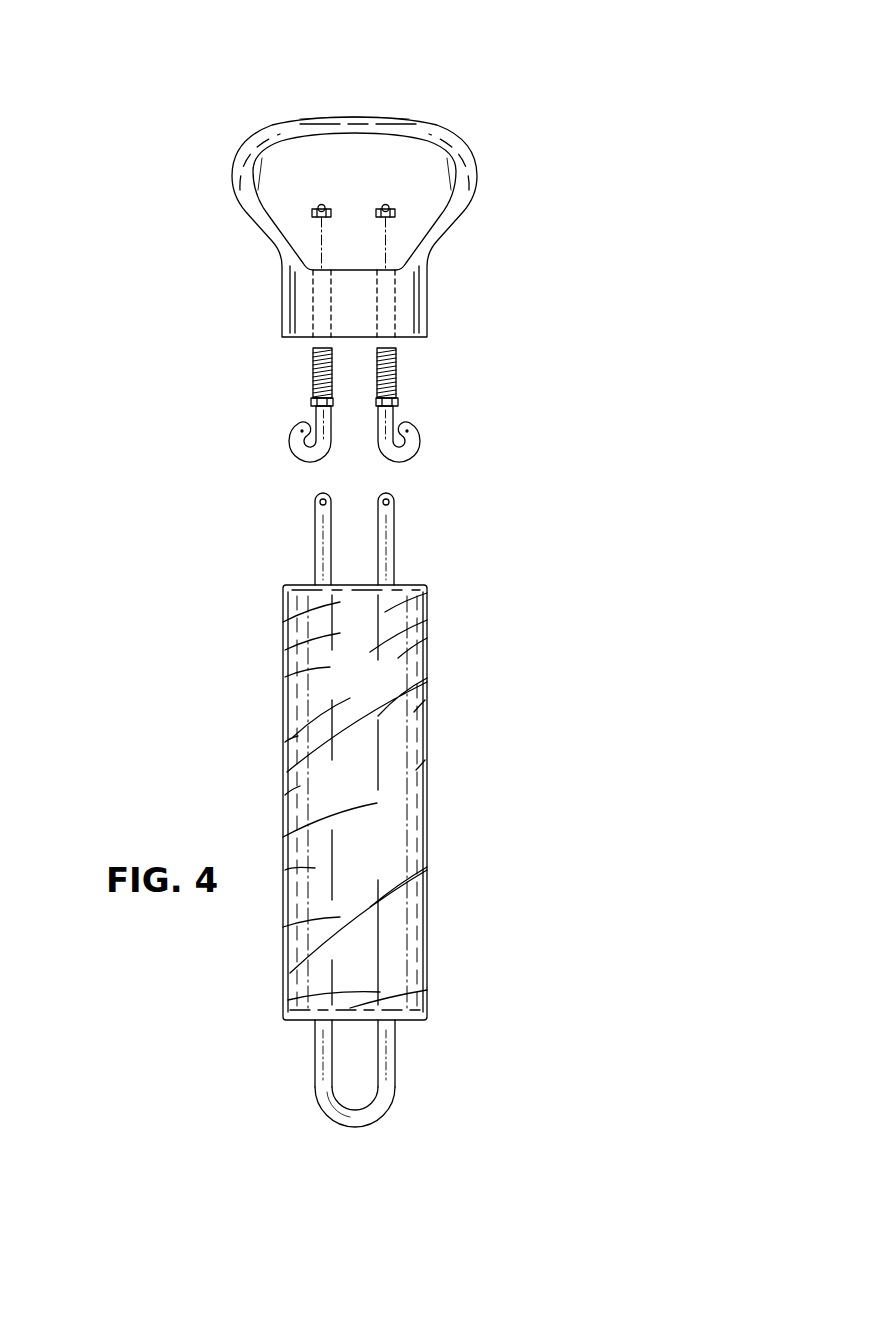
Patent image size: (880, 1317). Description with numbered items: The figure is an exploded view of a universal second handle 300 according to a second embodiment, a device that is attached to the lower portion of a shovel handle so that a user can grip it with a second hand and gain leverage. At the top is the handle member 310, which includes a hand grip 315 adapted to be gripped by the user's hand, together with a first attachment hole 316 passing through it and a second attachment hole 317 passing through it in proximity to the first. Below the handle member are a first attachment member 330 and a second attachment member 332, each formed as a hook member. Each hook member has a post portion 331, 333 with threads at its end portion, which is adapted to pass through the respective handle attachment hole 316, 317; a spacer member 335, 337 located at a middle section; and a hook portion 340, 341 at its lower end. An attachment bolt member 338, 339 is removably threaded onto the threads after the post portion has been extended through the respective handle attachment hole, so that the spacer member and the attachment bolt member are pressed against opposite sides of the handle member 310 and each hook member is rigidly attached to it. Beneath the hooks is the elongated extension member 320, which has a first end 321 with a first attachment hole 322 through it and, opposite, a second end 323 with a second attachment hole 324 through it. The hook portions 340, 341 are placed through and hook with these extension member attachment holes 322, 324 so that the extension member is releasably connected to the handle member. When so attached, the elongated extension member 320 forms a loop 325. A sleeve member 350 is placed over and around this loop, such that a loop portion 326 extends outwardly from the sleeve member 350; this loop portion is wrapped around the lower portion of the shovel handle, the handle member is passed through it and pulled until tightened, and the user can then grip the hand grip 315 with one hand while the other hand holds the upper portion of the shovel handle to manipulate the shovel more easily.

The universal second handle 300 is at (148, 568).
The handle member 310 is at (476, 172).
The hand grip 315 is at (357, 117).
The first attachment hole 316 is at (300, 292).
The second attachment hole 317 is at (409, 292).
The attachment bolt member 338 is at (322, 209).
The attachment bolt member 339 is at (385, 209).
The first attachment member 330 is at (299, 428).
The post portion 331 is at (313, 362).
The spacer member 335 is at (313, 398).
The hook portion 340 is at (290, 462).
The second attachment member 332 is at (409, 427).
The post portion 333 is at (396, 362).
The spacer member 337 is at (396, 398).
The hook portion 341 is at (420, 446).
The elongated extension member 320 is at (396, 1068).
The first end 321 is at (315, 544).
The first attachment hole 322 is at (318, 500).
The second end 323 is at (395, 546).
The second attachment hole 324 is at (392, 500).
The loop 325 is at (360, 1128).
The loop portion 326 is at (315, 1068).
The sleeve member 350 is at (428, 796).